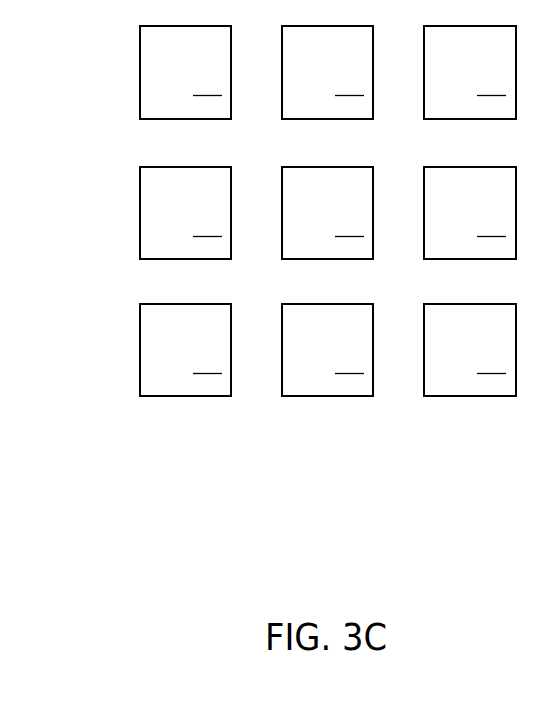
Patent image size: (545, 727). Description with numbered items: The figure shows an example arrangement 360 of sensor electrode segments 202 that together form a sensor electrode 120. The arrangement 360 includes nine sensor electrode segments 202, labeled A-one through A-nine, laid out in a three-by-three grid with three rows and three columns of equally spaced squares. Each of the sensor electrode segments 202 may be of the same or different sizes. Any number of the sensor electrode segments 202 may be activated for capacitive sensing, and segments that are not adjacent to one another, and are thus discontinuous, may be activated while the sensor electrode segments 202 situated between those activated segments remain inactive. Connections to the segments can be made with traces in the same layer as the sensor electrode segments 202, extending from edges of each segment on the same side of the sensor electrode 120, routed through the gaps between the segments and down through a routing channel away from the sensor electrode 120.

The sensor electrode segment 202 is at (185, 86).
The sensor electrode 120 is at (96, 414).
The arrangement 360 is at (106, 494).